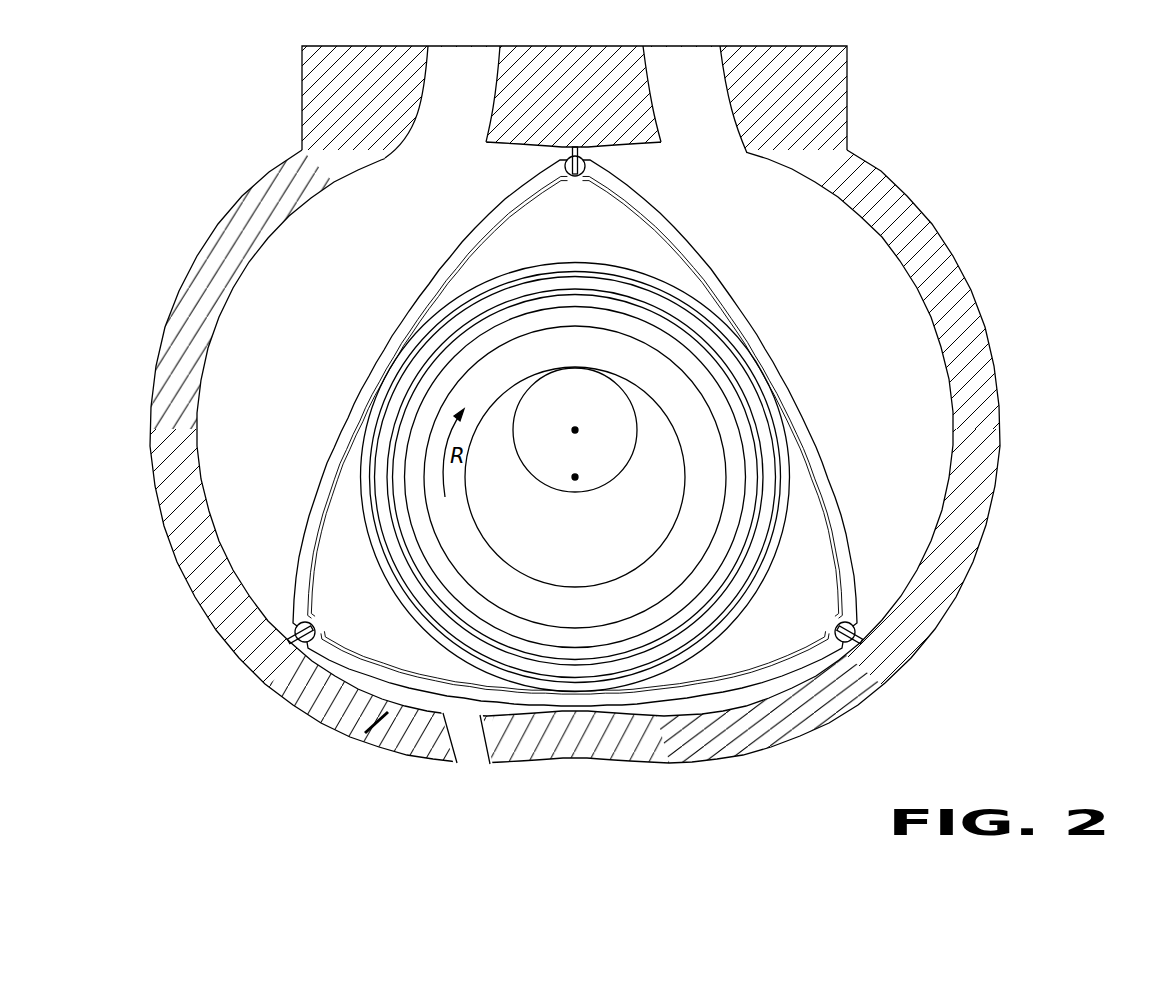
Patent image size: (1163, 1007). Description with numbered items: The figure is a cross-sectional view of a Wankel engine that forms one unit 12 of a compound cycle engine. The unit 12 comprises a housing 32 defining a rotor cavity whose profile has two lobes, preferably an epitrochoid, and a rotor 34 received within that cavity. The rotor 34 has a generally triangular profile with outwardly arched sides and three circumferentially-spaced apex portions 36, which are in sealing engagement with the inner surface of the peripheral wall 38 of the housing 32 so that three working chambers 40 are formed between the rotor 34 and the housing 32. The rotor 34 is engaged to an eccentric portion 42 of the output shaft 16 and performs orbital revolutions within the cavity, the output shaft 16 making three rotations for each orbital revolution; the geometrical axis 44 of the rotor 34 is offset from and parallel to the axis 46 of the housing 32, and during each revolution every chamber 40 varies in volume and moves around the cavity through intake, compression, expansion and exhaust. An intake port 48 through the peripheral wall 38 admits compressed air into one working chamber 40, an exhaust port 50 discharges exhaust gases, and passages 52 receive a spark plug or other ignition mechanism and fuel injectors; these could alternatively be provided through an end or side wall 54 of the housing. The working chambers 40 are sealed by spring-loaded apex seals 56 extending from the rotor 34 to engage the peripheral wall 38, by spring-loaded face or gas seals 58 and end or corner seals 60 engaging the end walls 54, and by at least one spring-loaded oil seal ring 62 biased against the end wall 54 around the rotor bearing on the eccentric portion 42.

The unit 12 is at (136, 176).
The output shaft 16 is at (603, 463).
The housing 32 is at (912, 201).
The rotor 34 is at (822, 451).
The apex portions 36 is at (862, 646).
The peripheral wall 38 is at (968, 293).
The working chambers 40 is at (301, 350).
The eccentric portion 42 is at (598, 553).
The geometrical axis 44 is at (574, 478).
The axis 46 is at (574, 431).
The intake port 48 is at (695, 118).
The exhaust port 50 is at (452, 118).
The passages 52 is at (465, 743).
The end wall 54 is at (916, 488).
The apex seals 56 is at (291, 643).
The face seals 58 is at (305, 540).
The corner seals 60 is at (303, 629).
The oil seal ring 62 is at (680, 652).